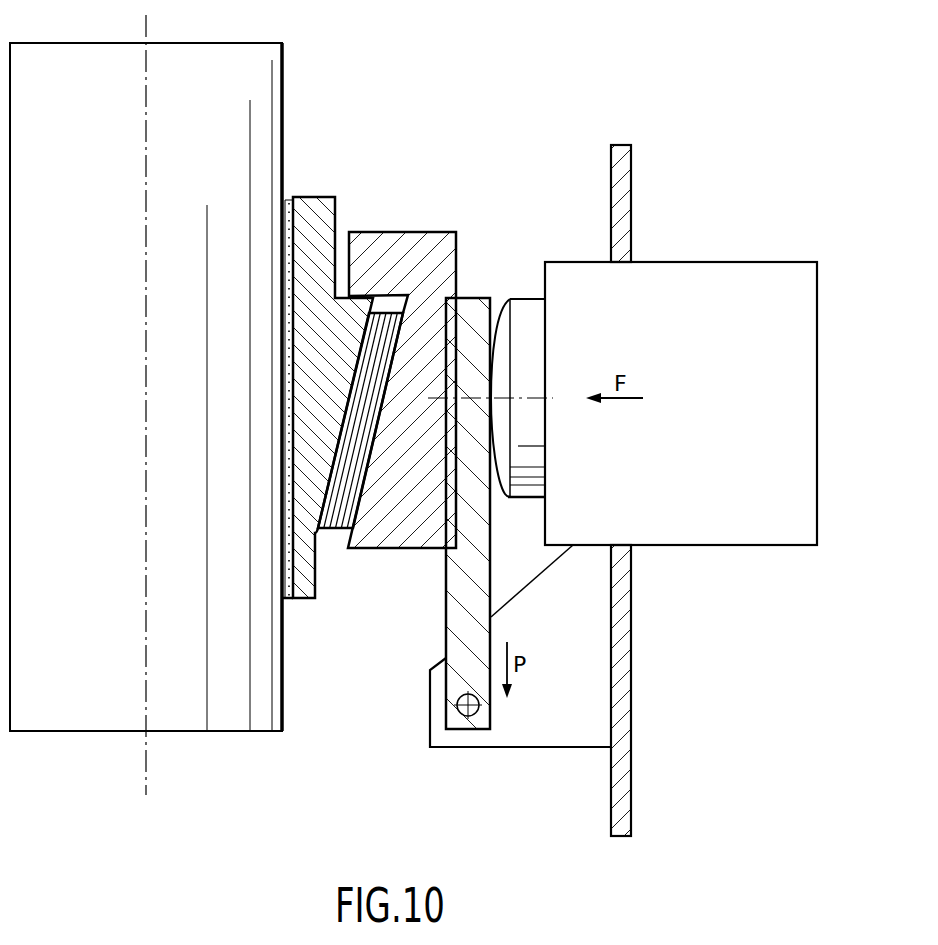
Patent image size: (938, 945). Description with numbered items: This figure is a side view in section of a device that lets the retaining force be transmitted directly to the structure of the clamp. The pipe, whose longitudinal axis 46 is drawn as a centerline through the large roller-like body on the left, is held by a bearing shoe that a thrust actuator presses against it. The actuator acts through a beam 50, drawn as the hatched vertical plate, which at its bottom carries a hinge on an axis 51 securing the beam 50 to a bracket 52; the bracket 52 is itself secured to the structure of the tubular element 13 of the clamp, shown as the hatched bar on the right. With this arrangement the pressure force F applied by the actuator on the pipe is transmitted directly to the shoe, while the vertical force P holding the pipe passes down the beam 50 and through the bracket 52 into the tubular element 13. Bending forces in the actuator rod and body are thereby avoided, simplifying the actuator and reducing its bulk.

The axis of the pipe 46 is at (148, 751).
The pressure plate 50 is at (446, 585).
The axis 51 is at (463, 709).
The bracket 52 is at (522, 747).
The tubular element 13 is at (632, 782).